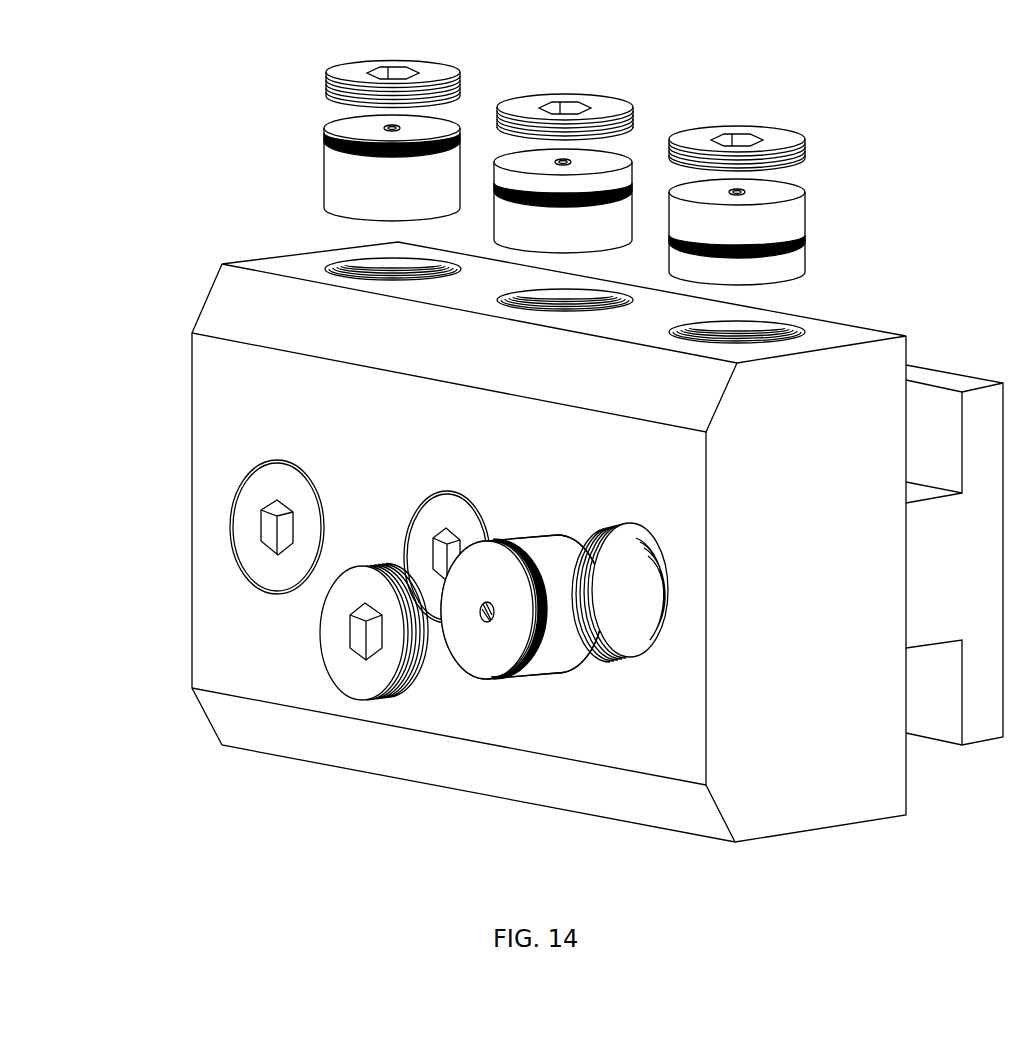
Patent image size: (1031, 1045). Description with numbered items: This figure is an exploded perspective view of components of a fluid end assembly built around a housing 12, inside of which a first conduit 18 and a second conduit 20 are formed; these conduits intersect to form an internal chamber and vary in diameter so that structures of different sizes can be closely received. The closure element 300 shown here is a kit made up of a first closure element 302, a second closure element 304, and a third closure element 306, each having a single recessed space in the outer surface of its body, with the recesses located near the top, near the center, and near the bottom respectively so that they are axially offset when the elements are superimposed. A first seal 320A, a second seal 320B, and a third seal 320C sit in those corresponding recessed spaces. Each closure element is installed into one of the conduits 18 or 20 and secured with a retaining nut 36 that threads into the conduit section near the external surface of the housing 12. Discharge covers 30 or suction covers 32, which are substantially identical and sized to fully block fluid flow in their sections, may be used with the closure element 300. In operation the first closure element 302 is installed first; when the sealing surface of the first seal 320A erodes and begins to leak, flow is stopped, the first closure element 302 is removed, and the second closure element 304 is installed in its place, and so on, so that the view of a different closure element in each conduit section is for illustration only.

The housing 12 is at (280, 722).
The first conduit 18 is at (748, 336).
The second conduit 20 is at (612, 597).
The discharge cover 30 is at (805, 193).
The suction cover 32 is at (453, 652).
The retaining nut 36 is at (325, 75).
The closure element 300 is at (325, 188).
The first closure element 302 is at (325, 207).
The second closure element 304 is at (494, 160).
The third closure element 306 is at (805, 215).
The first seal 320A is at (325, 145).
The second seal 320B is at (633, 195).
The third seal 320C is at (805, 245).